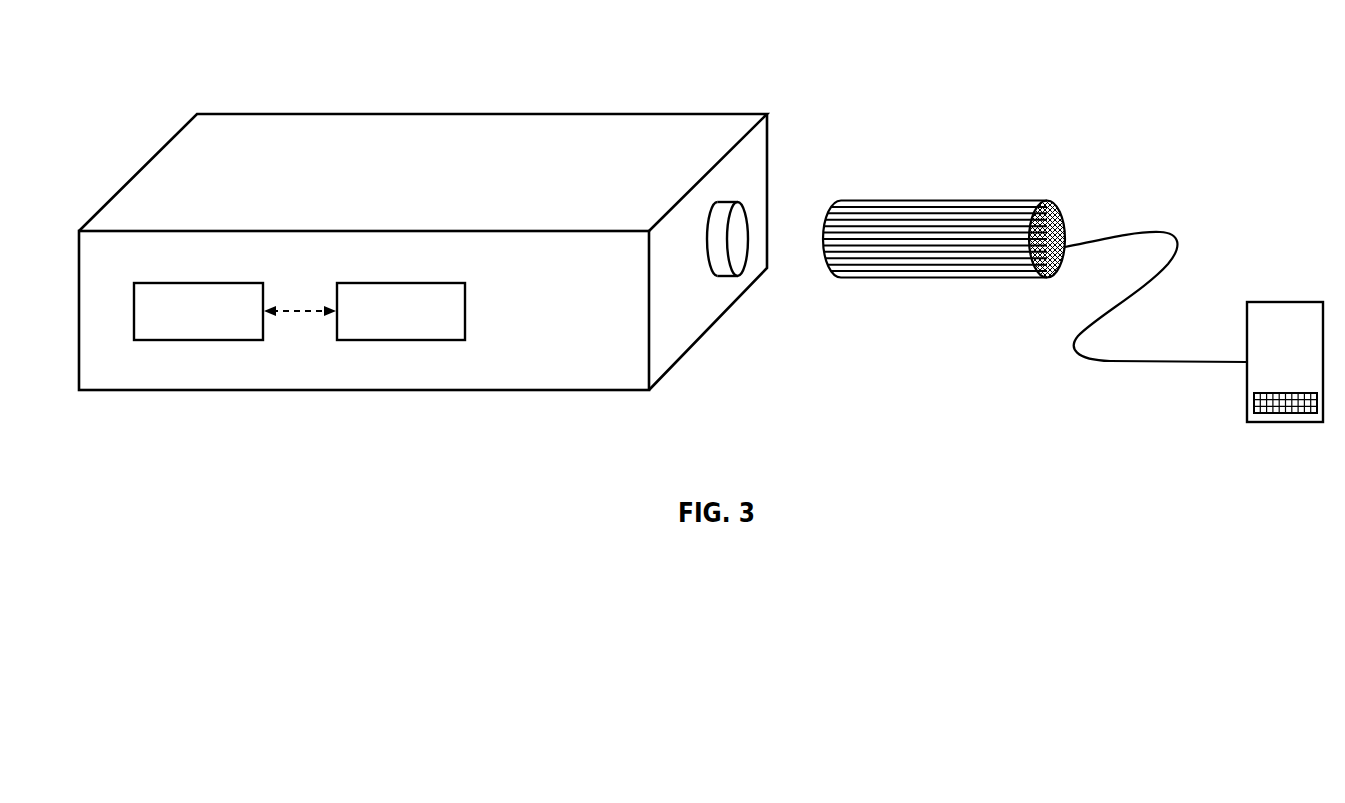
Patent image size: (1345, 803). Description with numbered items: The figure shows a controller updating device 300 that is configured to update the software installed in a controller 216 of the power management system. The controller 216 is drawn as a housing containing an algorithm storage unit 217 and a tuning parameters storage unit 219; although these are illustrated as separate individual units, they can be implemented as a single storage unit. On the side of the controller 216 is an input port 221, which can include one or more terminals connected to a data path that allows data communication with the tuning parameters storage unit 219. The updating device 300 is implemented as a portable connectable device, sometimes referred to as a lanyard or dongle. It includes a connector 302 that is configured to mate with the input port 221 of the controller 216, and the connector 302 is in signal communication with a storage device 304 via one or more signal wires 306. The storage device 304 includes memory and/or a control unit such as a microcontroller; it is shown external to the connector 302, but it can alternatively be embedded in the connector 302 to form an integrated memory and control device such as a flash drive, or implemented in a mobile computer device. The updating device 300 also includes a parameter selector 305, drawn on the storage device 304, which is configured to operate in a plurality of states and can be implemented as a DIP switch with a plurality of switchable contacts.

The controller updating device 300 is at (1203, 106).
The controller 216 is at (264, 113).
The algorithm storage unit 217 is at (219, 323).
The tuning parameters storage unit 219 is at (422, 323).
The input port 221 is at (735, 252).
The connector 302 is at (985, 210).
The storage device 304 is at (1287, 302).
The parameter selector 305 is at (1285, 417).
The signal wires 306 is at (1132, 363).